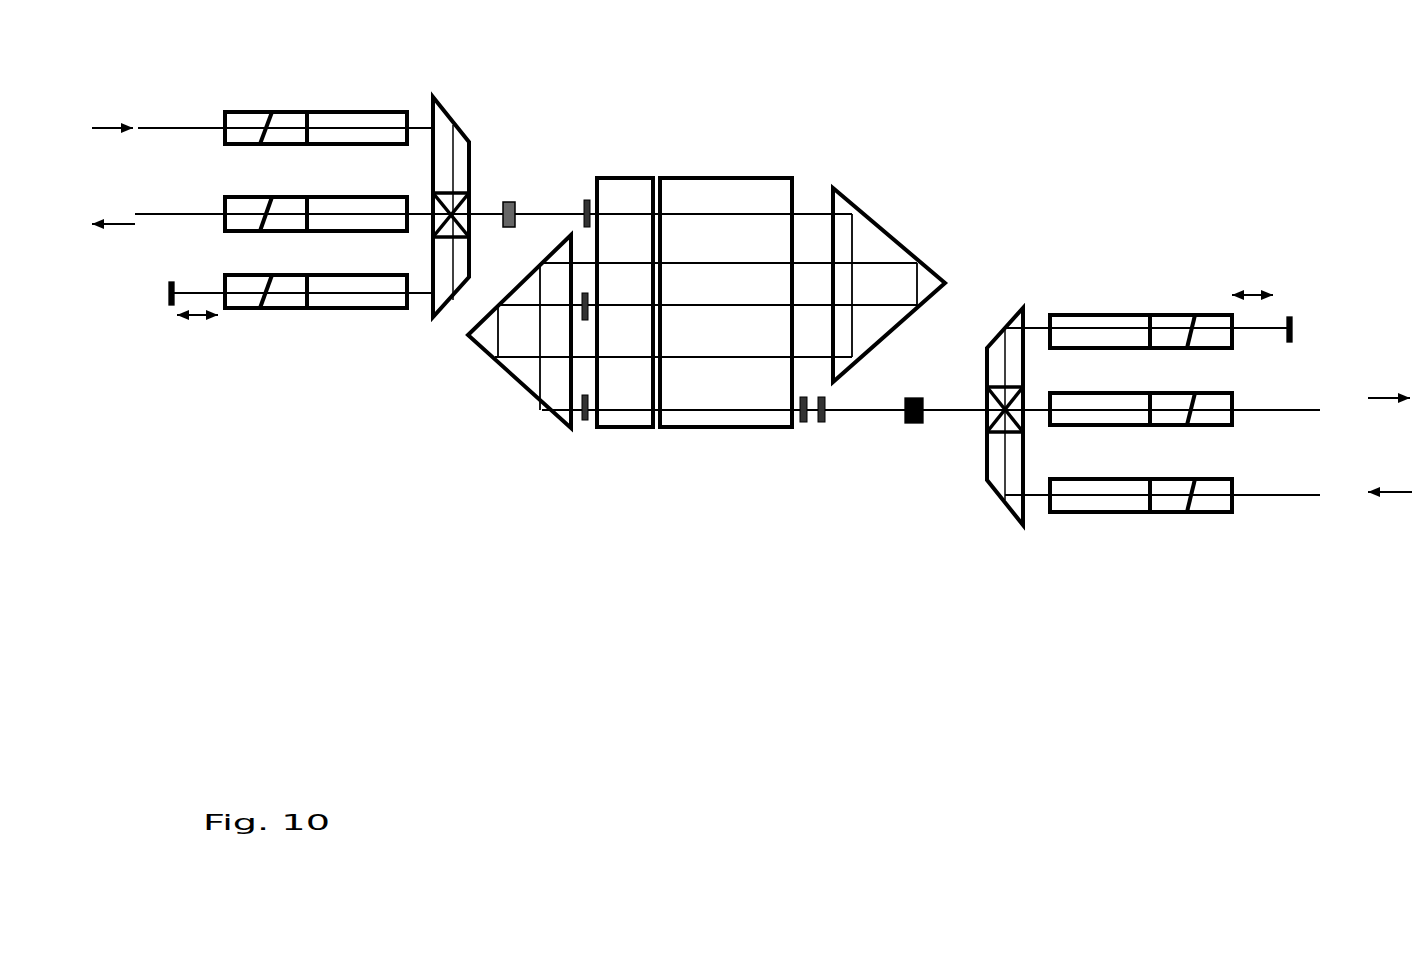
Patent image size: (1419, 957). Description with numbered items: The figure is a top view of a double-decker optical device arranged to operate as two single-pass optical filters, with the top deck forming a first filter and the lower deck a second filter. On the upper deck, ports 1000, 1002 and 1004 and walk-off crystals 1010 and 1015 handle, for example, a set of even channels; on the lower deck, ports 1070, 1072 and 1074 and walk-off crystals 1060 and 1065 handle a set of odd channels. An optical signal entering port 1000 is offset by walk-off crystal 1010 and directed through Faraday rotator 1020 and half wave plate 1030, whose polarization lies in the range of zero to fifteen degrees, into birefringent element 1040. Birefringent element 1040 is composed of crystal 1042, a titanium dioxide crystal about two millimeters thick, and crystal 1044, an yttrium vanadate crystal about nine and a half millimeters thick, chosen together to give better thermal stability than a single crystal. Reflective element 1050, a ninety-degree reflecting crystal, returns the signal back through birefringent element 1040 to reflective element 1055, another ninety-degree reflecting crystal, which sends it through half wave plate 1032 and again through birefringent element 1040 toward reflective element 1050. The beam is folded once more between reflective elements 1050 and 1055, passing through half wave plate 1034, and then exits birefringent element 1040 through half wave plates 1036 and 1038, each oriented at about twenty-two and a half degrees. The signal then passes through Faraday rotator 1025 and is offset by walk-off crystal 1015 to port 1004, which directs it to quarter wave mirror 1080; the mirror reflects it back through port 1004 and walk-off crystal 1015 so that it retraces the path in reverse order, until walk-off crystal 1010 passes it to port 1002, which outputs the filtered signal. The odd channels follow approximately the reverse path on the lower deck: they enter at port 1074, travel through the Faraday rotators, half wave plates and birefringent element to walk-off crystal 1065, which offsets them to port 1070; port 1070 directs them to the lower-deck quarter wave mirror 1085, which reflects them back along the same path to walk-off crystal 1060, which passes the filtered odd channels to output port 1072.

The port 1000 is at (343, 105).
The port 1002 is at (270, 197).
The port 1004 is at (1105, 308).
The walk-off crystal 1010 is at (468, 133).
The walk-off crystal 1015 is at (990, 330).
The Faraday rotator 1020 is at (510, 200).
The Faraday rotator 1025 is at (915, 425).
The half wave plate 1030 is at (586, 198).
The half wave plate 1032 is at (578, 292).
The half wave plate 1034 is at (585, 422).
The half wave plate 1036 is at (803, 424).
The half wave plate 1038 is at (822, 424).
The birefringent element 1040 is at (700, 306).
The crystal 1042 is at (635, 177).
The crystal 1044 is at (737, 177).
The reflective element 1050 is at (902, 235).
The reflective element 1055 is at (515, 388).
The walk-off crystal 1060 is at (992, 490).
The walk-off crystal 1065 is at (447, 314).
The port 1070 is at (343, 310).
The port 1072 is at (1168, 428).
The port 1074 is at (1120, 512).
The quarter wave mirror 1080 is at (1295, 328).
The mirror 1085 is at (163, 293).